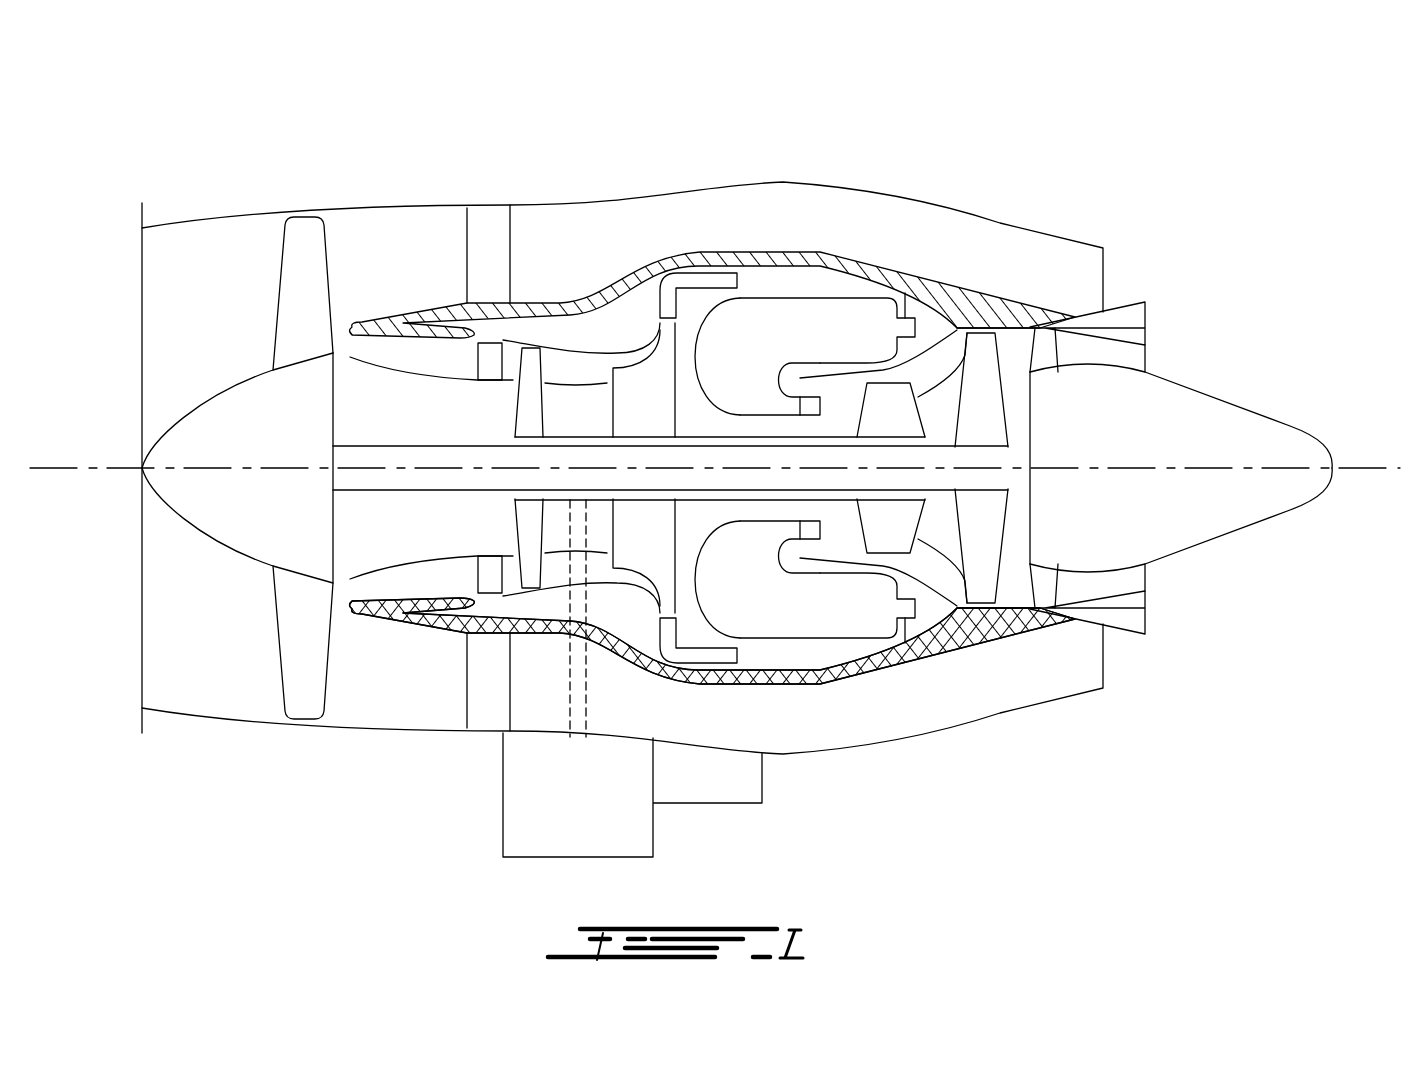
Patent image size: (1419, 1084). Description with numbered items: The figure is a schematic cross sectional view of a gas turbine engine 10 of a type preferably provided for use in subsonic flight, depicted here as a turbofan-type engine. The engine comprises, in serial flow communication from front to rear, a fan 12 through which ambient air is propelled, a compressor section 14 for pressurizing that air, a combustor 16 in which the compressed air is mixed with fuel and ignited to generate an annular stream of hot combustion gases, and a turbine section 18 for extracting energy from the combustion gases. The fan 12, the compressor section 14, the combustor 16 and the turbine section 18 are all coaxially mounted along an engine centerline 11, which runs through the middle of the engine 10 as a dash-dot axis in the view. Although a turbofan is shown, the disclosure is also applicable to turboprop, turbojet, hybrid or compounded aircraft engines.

The gas turbine engine 10 is at (912, 178).
The engine centerline 11 is at (1372, 467).
The fan 12 is at (300, 632).
The compressor section 14 is at (567, 362).
The combustor 16 is at (798, 318).
The turbine section 18 is at (936, 538).